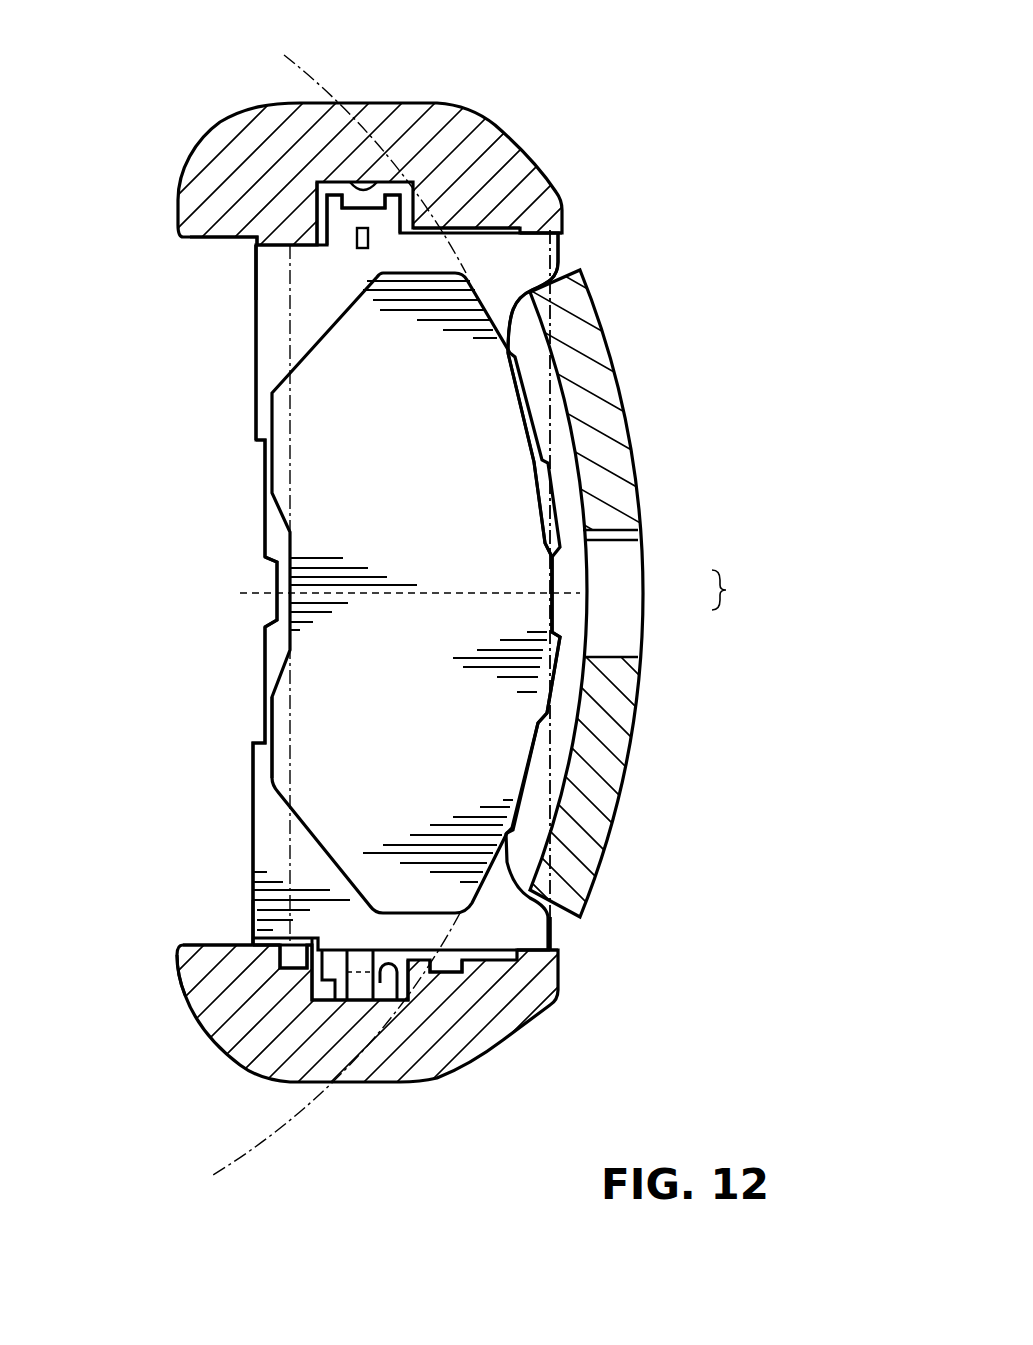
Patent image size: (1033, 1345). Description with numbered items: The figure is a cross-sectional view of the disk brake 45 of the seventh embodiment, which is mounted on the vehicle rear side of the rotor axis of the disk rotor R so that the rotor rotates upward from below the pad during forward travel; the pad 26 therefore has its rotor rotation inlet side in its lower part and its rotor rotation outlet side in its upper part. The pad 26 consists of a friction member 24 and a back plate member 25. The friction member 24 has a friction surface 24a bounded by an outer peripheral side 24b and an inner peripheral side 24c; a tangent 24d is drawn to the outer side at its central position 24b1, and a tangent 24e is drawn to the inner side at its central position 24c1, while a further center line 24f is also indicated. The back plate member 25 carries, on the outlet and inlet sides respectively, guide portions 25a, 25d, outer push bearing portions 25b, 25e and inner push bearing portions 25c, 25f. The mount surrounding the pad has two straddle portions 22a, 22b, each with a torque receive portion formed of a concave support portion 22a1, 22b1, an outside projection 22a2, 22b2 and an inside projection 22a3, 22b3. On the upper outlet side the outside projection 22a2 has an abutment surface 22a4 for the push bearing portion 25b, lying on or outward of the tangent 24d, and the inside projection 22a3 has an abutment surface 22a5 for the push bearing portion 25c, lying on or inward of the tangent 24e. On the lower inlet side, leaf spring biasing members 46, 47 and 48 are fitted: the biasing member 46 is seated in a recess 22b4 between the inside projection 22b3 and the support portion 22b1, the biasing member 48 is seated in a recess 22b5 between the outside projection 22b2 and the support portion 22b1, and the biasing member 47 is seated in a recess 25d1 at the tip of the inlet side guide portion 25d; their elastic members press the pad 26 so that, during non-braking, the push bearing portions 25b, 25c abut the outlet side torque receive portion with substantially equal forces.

The straddle portion 22a is at (418, 112).
The support portion 22a1 is at (360, 190).
The outside projection 22a2 is at (543, 213).
The inside projection 22a3 is at (337, 221).
The abutment surface 22a4 is at (562, 238).
The abutment surface 22a5 is at (262, 245).
The straddle portion 22b is at (530, 1007).
The support portion 22b1 is at (312, 1000).
The outside projection 22b2 is at (555, 960).
The inside projection 22b3 is at (262, 941).
The recess 22b4 is at (330, 960).
The recess 22b5 is at (507, 1010).
The friction member 24 is at (548, 593).
The friction surface 24a is at (520, 690).
The outer peripheral side 24b is at (520, 775).
The central position of outer peripheral side 24b1 is at (603, 528).
The inner peripheral side 24c is at (255, 771).
The central position of inner peripheral side 24c1 is at (278, 575).
The tangent 24d is at (565, 403).
The tangent 24e is at (272, 712).
The optical axis center line 24f is at (238, 594).
The back plate member 25 is at (543, 610).
The guide portion 25a is at (290, 192).
The outer push bearing portion 25b is at (555, 260).
The inner push bearing portion 25c is at (284, 248).
The guide portion 25d is at (326, 950).
The recess 25d1 is at (407, 962).
The outer push bearing portion 25e is at (560, 945).
The inner push bearing portion 25f is at (262, 930).
The pad 26 is at (735, 590).
The disk brake 45 is at (528, 129).
The biasing member 46 is at (290, 963).
The biasing member 47 is at (358, 990).
The biasing member 48 is at (445, 972).
The disk rotor R is at (147, 1162).